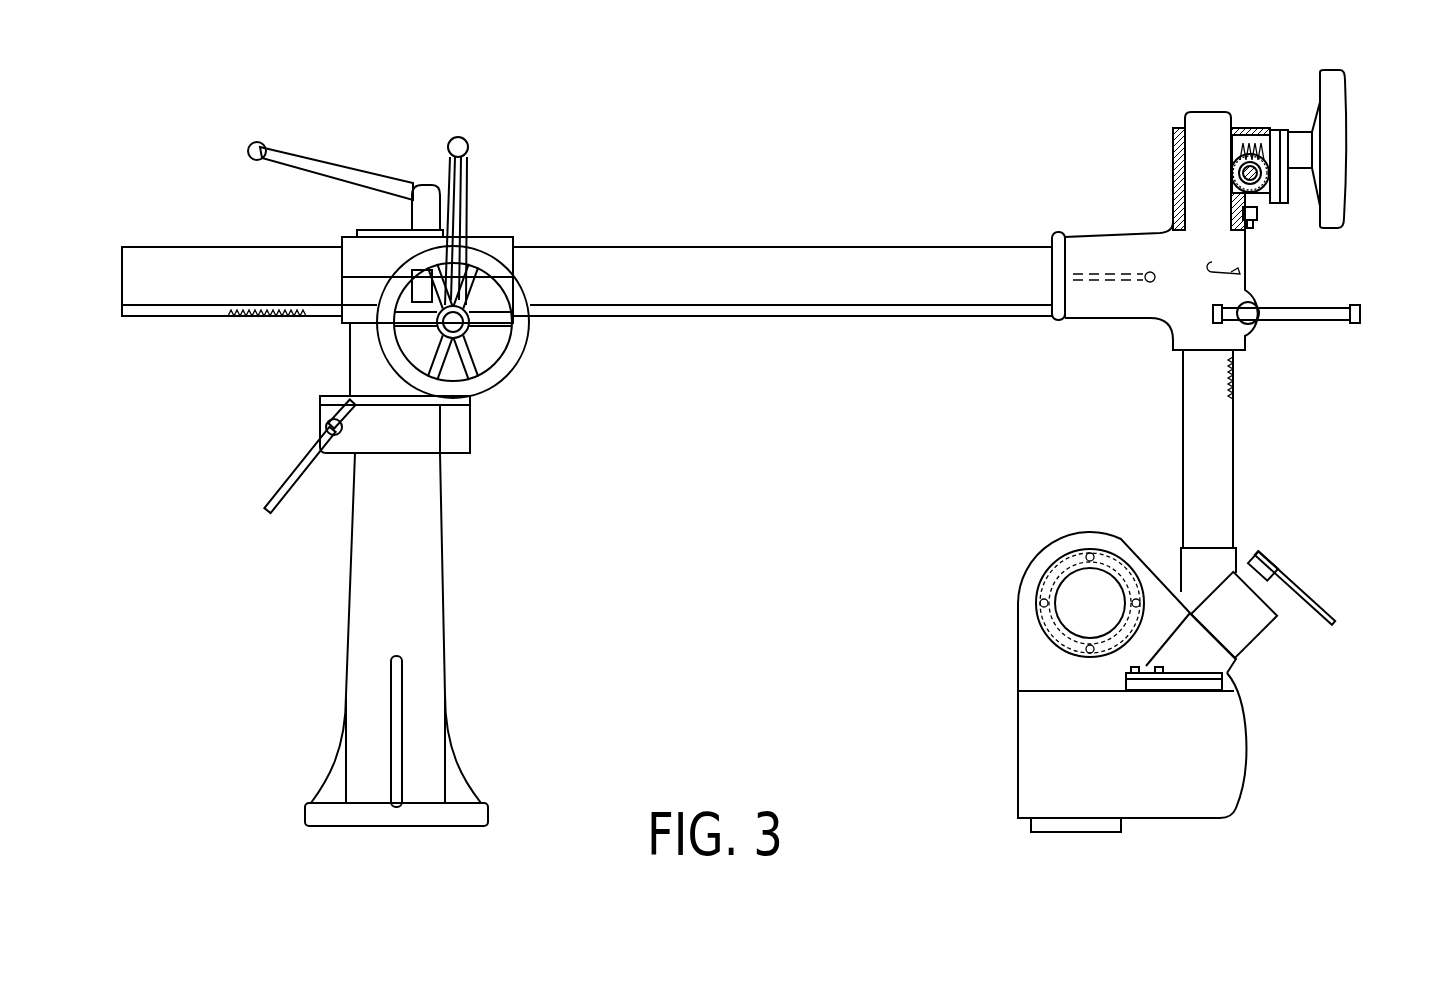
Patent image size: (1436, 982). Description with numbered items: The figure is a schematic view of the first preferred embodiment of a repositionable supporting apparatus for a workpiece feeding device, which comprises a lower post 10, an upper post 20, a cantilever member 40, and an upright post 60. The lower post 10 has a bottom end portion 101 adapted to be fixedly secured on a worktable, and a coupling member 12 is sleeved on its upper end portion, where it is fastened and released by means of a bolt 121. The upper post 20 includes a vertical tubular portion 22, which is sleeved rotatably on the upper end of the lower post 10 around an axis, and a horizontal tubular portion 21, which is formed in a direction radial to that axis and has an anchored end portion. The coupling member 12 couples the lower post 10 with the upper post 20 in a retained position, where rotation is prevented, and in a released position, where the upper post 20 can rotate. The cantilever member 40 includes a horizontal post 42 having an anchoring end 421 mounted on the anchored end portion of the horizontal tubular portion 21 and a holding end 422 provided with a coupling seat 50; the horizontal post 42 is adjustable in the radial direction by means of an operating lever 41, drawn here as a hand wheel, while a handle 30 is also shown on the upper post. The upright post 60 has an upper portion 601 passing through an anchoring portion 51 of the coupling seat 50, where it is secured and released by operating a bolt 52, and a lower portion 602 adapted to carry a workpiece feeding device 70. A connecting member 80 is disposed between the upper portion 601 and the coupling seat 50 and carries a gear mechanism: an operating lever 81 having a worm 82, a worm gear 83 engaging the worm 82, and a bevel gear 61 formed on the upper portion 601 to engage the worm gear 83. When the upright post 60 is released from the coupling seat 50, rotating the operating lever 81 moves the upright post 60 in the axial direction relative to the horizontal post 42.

The lower post 10 is at (451, 594).
The bottom end portion 101 is at (452, 767).
The coupling member 12 is at (393, 443).
The bolt 121 is at (286, 482).
The upper post 20 is at (410, 230).
The horizontal tubular portion 21 is at (350, 253).
The vertical tubular portion 22 is at (358, 368).
The operating handle 30 is at (474, 169).
The cantilever member 40 is at (595, 254).
The operating lever 41 is at (518, 365).
The horizontal post 42 is at (815, 258).
The anchoring end 421 is at (557, 262).
The holding end 422 is at (1038, 298).
The coupling seat 50 is at (1212, 254).
The anchoring portion 51 is at (1238, 297).
The bolt 52 is at (1305, 318).
The upright post 60 is at (1274, 471).
The upper portion 601 is at (1205, 125).
The lower portion 602 is at (1225, 536).
The bevel gear 61 is at (1258, 208).
The workpiece feeding device 70 is at (1251, 757).
The connecting member 80 is at (1289, 138).
The operating lever 81 is at (1338, 113).
The worm 82 is at (1251, 128).
The worm gear 83 is at (1277, 177).